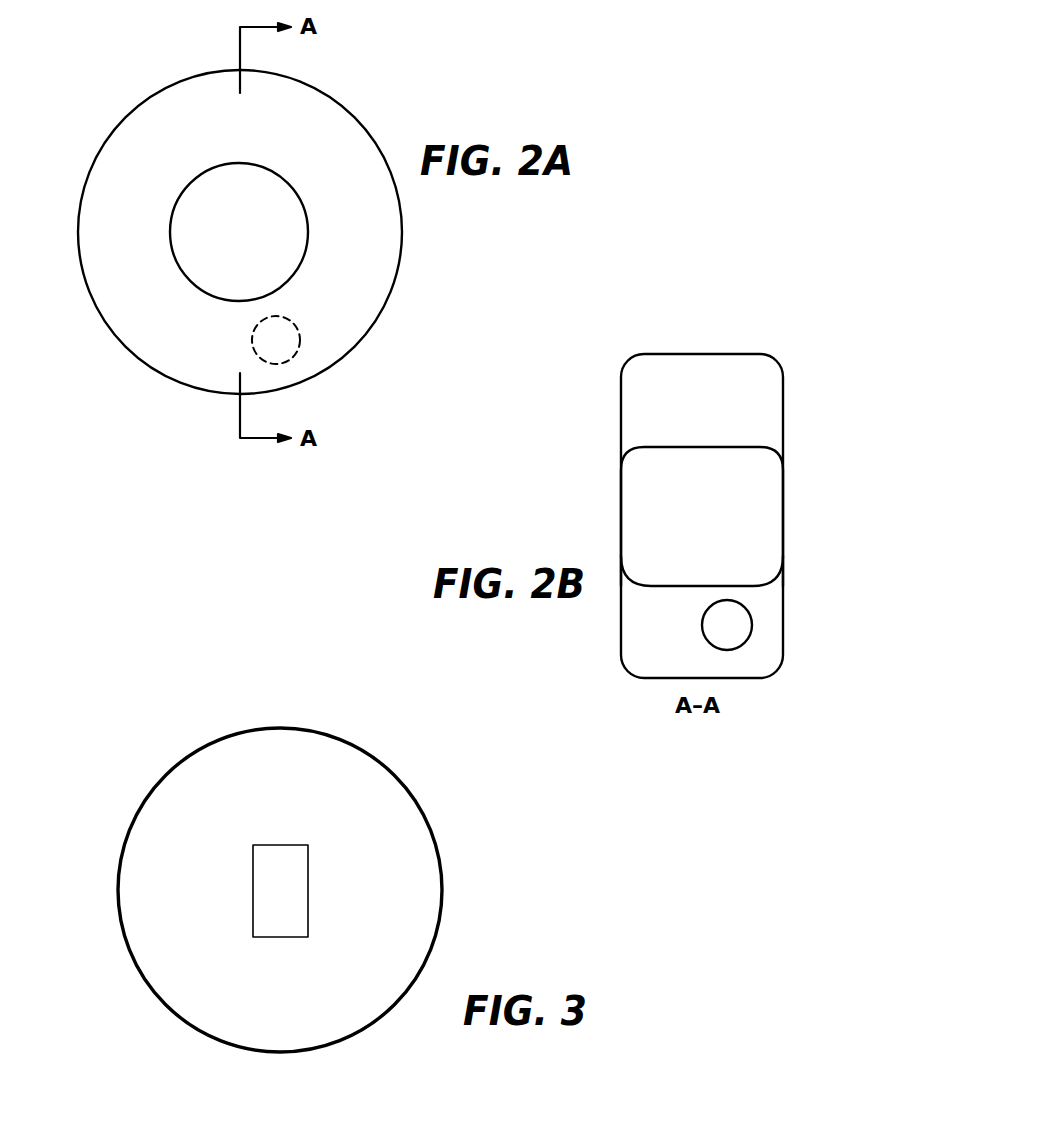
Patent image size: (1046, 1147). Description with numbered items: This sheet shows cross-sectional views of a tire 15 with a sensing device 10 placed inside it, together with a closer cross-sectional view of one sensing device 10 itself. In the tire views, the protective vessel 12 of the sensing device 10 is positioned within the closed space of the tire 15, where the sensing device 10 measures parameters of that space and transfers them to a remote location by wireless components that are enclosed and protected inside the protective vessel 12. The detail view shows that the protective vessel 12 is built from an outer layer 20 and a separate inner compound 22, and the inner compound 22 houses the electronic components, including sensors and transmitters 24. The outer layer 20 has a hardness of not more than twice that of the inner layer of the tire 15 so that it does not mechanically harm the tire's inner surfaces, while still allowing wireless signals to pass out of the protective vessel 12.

In FIG. 2A, the sensing device 10 is at (285, 350).
In FIG. 2B, the sensing device 10 is at (736, 618).
In FIG. 3, the sensing device 10 is at (306, 860).
In FIG. 2A, the protective vessel 12 is at (300, 328).
In FIG. 2B, the protective vessel 12 is at (752, 626).
In FIG. 2A, the tire 15 is at (138, 361).
In FIG. 2B, the tire 15 is at (783, 408).
In FIG. 3, the outer layer 20 is at (308, 728).
In FIG. 3, the inner compound 22 is at (370, 898).
In FIG. 3, the sensors and transmitters 24 is at (267, 908).